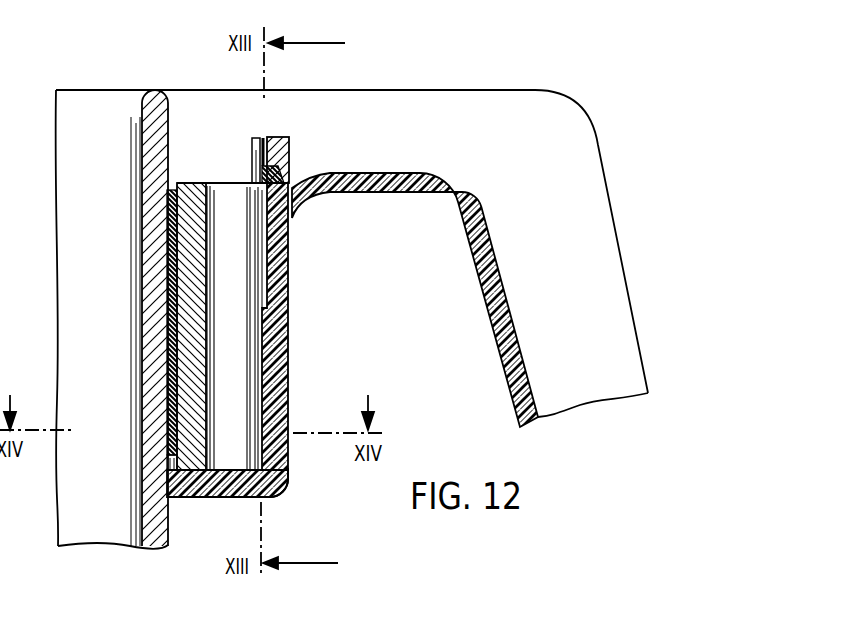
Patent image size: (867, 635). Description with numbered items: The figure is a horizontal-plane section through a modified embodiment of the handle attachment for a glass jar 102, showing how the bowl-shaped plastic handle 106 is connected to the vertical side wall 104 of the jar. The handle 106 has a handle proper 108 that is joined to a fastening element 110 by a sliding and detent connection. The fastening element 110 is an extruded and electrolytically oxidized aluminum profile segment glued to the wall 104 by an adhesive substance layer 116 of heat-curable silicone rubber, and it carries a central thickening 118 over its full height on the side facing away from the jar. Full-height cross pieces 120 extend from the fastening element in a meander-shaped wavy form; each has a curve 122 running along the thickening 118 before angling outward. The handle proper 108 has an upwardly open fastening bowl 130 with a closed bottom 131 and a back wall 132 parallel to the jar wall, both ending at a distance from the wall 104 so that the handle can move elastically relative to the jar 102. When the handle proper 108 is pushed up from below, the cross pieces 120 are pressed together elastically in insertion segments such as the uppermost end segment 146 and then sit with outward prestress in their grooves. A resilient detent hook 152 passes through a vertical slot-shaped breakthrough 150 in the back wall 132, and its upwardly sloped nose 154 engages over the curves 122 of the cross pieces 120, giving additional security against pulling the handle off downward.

The glass jar 102 is at (134, 80).
The vertical side wall 104 is at (152, 214).
The bowl-shaped handle 106 is at (617, 184).
The handle proper 108 is at (484, 102).
The fastening element 110 is at (255, 329).
The adhesive substance layer 116 is at (173, 277).
The thickening 118 is at (211, 259).
The cross pieces 120 is at (269, 275).
The curve 122 is at (256, 347).
The fastening bowl 130 is at (297, 470).
The bottom 131 is at (189, 484).
The back wall 132 is at (281, 384).
The uppermost end segment of groove 146 is at (270, 146).
The slot-shaped breakthrough 150 is at (295, 212).
The resilient detent hook 152 is at (295, 172).
The upwardly sloped nose 154 is at (262, 172).